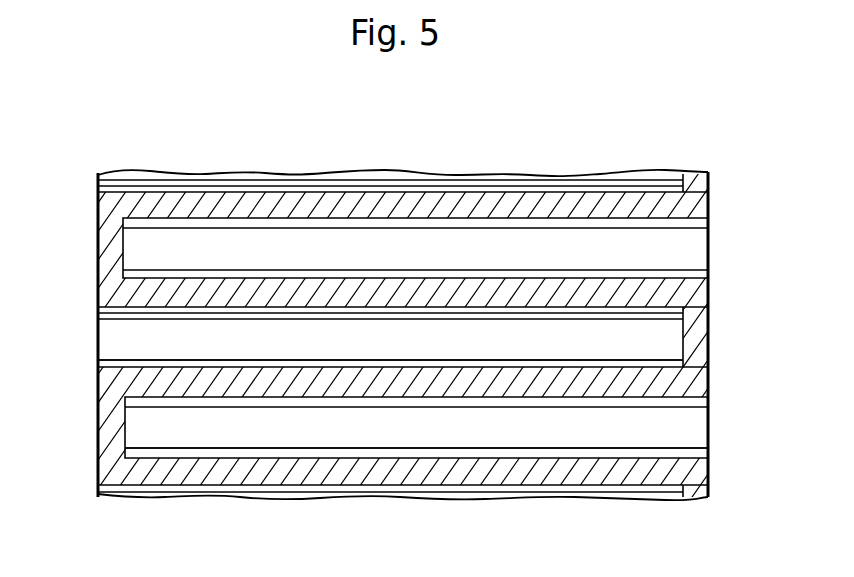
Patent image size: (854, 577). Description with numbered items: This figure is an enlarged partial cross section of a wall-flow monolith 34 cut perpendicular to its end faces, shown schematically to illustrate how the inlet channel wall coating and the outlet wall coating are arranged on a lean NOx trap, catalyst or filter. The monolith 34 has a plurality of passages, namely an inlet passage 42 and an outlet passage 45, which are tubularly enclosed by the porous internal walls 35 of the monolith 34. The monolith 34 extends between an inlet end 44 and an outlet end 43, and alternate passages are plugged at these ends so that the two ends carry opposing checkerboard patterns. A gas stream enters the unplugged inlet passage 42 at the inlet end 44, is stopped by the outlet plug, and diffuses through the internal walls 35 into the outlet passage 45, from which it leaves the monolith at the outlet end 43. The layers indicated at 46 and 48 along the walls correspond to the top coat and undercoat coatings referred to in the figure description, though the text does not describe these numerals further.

The wall-flow monolith 34 is at (155, 144).
The internal walls 35 is at (418, 207).
The inlet passage 42 is at (108, 341).
The outlet end 43 is at (709, 337).
The inlet end 44 is at (98, 248).
The outlet passage 45 is at (700, 244).
The intermediate layer 46 is at (401, 355).
The intermediate layer 48 is at (422, 449).